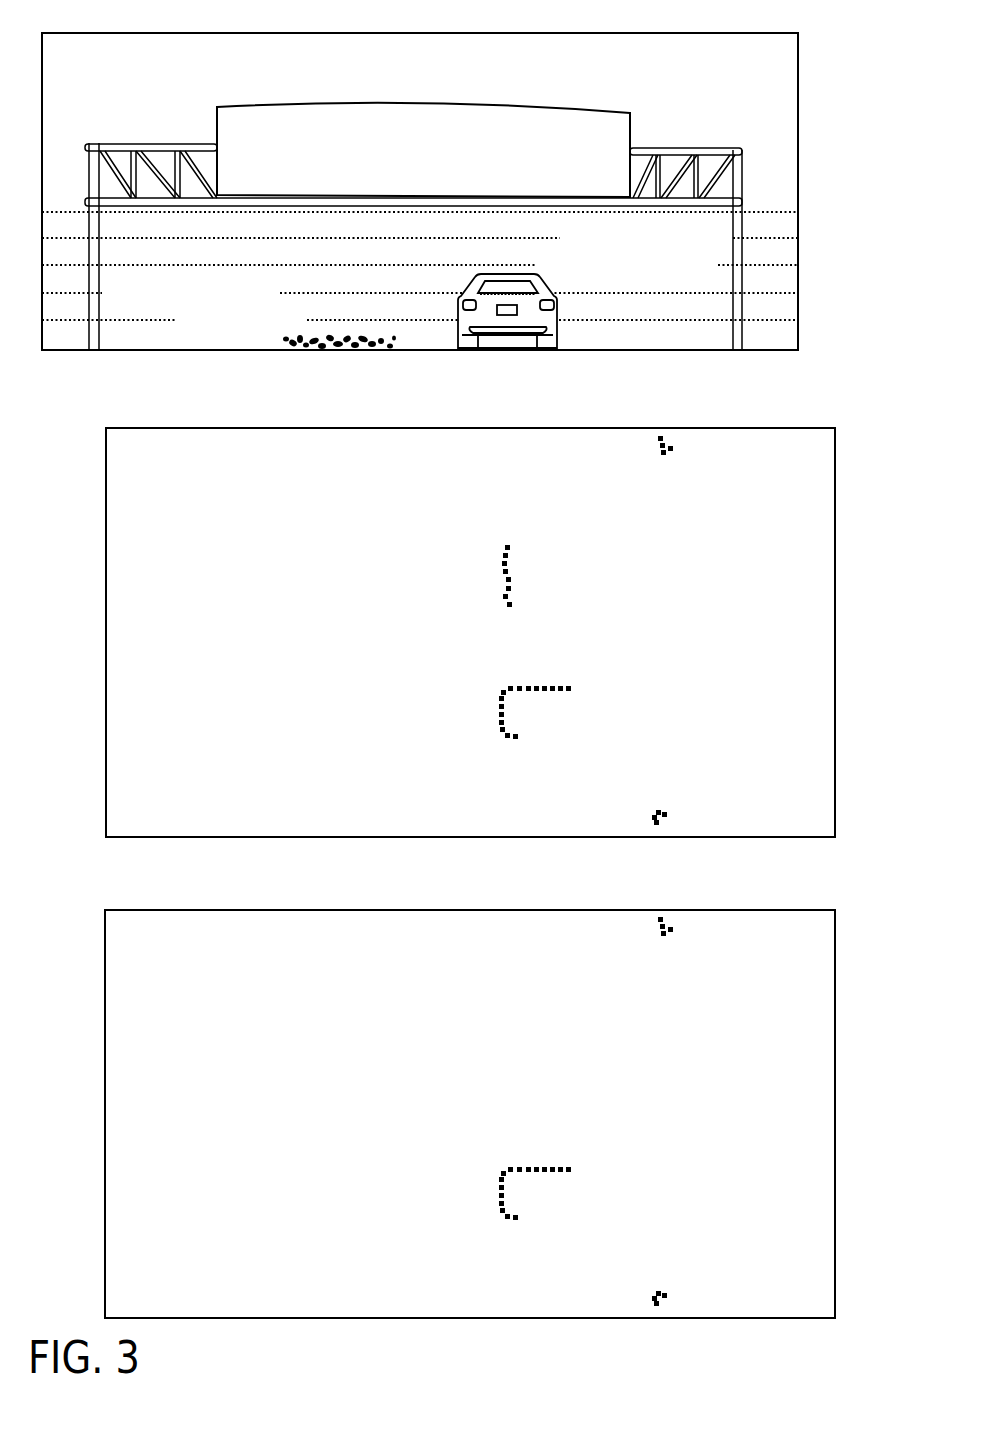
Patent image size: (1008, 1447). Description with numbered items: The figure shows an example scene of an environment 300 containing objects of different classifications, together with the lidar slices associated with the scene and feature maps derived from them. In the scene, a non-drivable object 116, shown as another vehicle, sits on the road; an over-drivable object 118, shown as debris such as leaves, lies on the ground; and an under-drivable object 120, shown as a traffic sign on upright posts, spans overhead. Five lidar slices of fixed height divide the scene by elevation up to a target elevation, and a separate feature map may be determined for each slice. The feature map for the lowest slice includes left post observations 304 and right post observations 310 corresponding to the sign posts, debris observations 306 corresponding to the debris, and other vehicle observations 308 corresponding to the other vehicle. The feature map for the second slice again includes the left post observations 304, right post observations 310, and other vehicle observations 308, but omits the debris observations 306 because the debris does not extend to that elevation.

The environment 300 is at (794, 21).
The non-drivable object 116 is at (550, 275).
The over-drivable object 118 is at (296, 327).
The under-drivable object 120 is at (243, 96).
The left post observations 304 is at (637, 947).
The debris observations 306 is at (493, 549).
The other vehicle observations 308 is at (496, 1165).
The right post observations 310 is at (649, 1291).